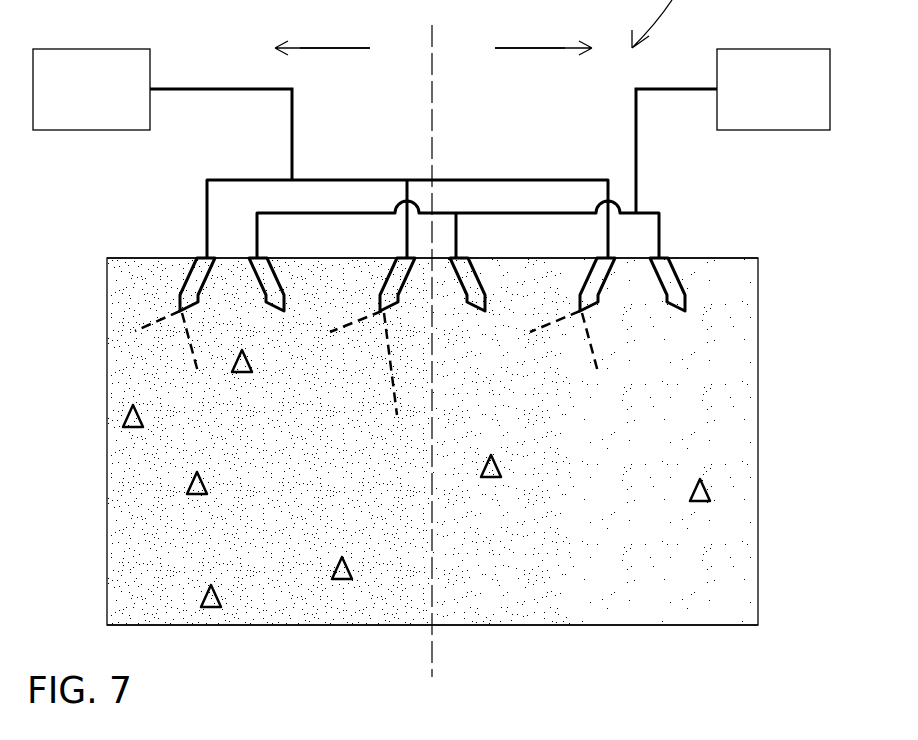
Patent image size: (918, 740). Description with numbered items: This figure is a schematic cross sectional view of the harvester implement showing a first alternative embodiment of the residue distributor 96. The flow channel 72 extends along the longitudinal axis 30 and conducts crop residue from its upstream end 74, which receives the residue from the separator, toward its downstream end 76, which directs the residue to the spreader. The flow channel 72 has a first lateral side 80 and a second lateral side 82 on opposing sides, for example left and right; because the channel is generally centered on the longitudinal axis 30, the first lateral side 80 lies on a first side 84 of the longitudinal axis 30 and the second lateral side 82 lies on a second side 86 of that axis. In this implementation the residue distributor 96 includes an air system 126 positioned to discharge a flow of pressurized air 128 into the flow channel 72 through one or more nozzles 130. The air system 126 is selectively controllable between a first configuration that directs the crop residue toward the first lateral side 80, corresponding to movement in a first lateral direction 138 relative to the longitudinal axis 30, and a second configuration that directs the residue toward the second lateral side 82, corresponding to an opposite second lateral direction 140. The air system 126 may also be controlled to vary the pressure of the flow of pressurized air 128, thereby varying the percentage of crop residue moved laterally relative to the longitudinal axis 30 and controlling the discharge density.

The air system 126 is at (108, 102).
The first lateral direction 138 is at (318, 50).
The first side 84 is at (364, 102).
The second side 86 is at (468, 102).
The second lateral direction 140 is at (543, 50).
The residue distributor 96 is at (692, 0).
The longitudinal axis 30 is at (434, 153).
The nozzles 130 is at (186, 287).
The upstream end 74 is at (498, 258).
The flow channel 72 is at (758, 422).
The flow of pressurized air 128 is at (143, 324).
The first lateral side 80 is at (348, 413).
The second lateral side 82 is at (515, 417).
The downstream end 76 is at (557, 626).